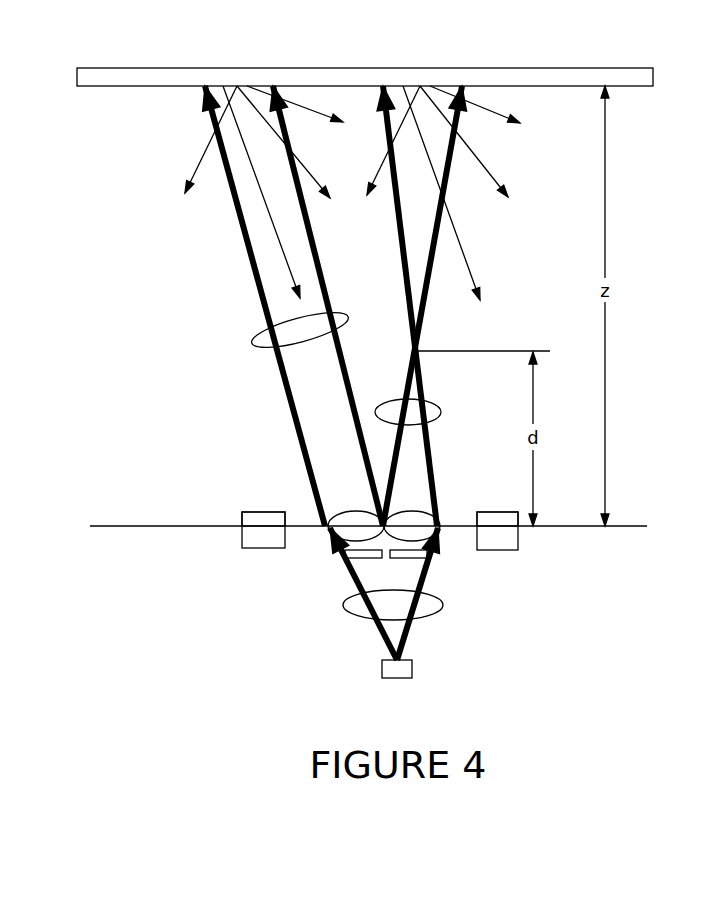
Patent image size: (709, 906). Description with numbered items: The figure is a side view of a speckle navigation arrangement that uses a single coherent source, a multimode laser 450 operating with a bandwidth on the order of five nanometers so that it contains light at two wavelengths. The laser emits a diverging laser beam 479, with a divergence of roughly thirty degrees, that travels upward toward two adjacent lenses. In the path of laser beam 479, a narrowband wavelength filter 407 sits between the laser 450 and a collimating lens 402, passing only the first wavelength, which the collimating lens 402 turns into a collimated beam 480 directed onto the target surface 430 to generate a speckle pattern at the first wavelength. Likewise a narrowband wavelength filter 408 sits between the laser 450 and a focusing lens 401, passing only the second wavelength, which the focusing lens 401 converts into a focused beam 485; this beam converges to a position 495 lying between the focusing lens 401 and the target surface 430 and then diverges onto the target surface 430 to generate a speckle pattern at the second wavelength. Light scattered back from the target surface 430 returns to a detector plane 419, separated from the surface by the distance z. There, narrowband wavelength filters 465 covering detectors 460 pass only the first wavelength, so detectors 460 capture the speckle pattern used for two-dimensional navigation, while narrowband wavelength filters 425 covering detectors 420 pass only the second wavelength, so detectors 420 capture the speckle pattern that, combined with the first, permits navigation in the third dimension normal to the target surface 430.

The target surface 430 is at (310, 75).
The collimated beam 480 is at (253, 343).
The position 495 is at (423, 330).
The focused beam 485 is at (433, 412).
The detector plane 419 is at (628, 526).
The detectors 460 is at (248, 538).
The narrowband wavelength filters 465 is at (258, 518).
The detectors 420 is at (505, 540).
The narrowband wavelength filters 425 is at (490, 518).
The collimating lens 402 is at (353, 517).
The focusing lens 401 is at (413, 517).
The narrowband wavelength filter 407 is at (352, 558).
The narrowband wavelength filter 408 is at (412, 560).
The laser beam 479 is at (437, 602).
The multimode laser 450 is at (382, 673).